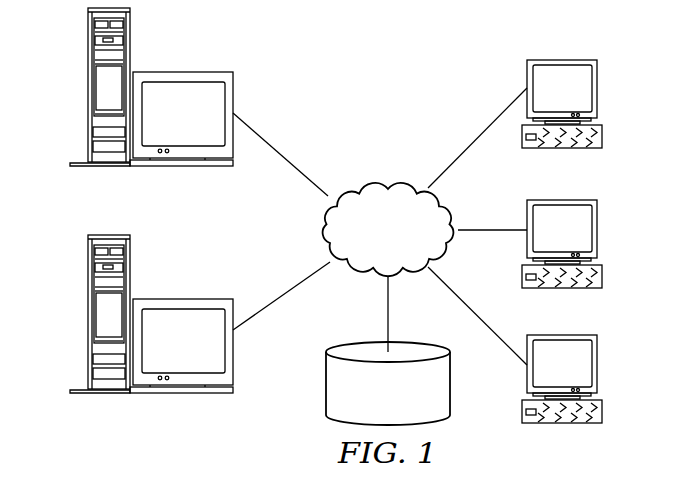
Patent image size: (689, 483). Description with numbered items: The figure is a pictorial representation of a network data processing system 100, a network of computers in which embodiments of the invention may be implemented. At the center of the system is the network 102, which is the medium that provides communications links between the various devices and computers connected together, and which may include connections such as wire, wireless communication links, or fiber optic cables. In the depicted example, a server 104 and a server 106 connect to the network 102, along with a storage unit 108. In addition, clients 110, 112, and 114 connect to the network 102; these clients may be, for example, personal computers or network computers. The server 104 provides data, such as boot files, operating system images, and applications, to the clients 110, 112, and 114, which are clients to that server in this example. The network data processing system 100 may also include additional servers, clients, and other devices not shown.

The network data processing system 100 is at (435, 73).
The network 102 is at (360, 181).
The server 104 is at (88, 314).
The server 106 is at (88, 90).
The storage unit 108 is at (326, 382).
The client 110 is at (597, 90).
The client 112 is at (597, 230).
The client 114 is at (597, 366).